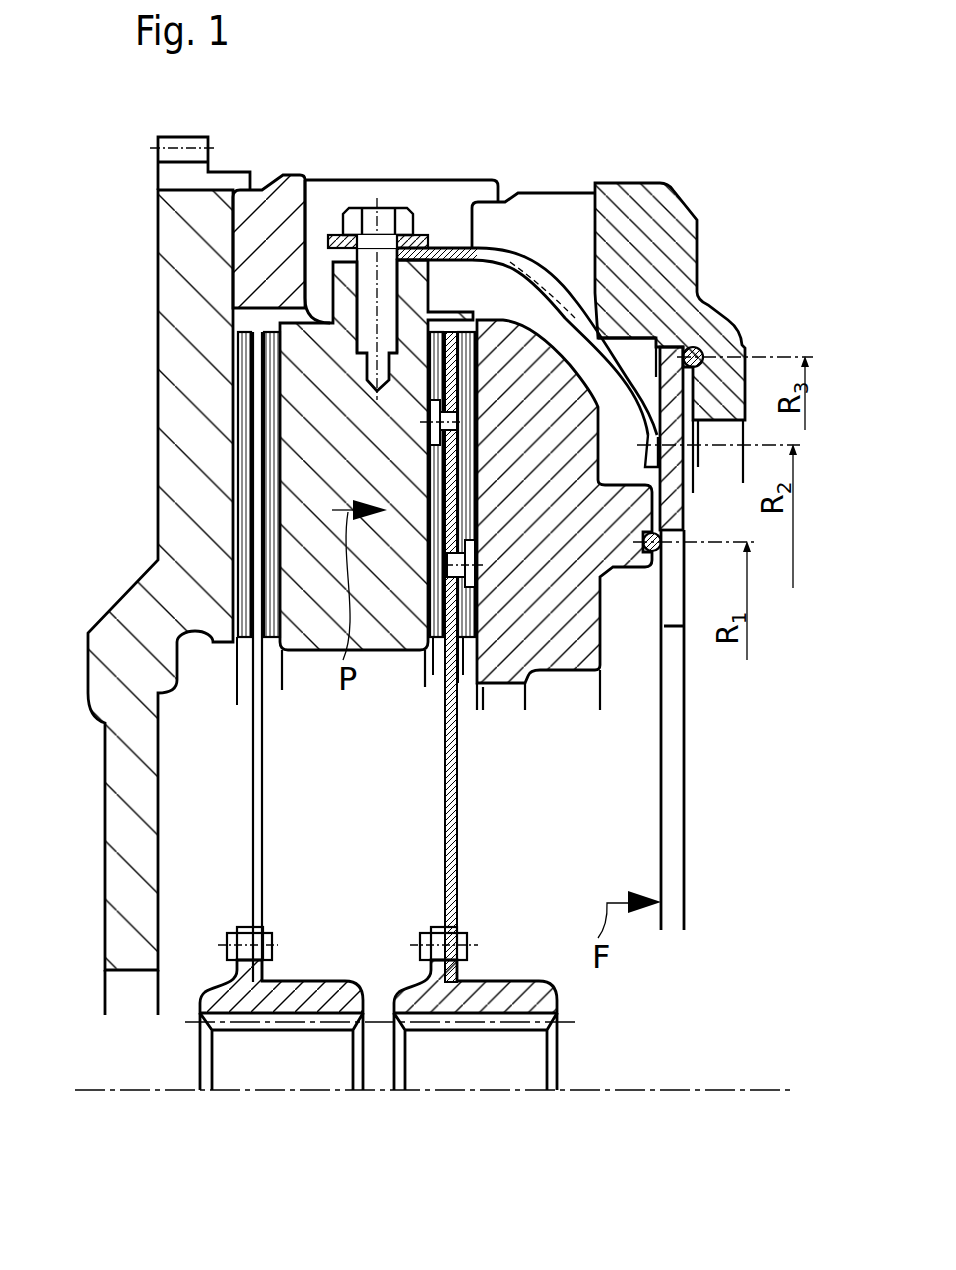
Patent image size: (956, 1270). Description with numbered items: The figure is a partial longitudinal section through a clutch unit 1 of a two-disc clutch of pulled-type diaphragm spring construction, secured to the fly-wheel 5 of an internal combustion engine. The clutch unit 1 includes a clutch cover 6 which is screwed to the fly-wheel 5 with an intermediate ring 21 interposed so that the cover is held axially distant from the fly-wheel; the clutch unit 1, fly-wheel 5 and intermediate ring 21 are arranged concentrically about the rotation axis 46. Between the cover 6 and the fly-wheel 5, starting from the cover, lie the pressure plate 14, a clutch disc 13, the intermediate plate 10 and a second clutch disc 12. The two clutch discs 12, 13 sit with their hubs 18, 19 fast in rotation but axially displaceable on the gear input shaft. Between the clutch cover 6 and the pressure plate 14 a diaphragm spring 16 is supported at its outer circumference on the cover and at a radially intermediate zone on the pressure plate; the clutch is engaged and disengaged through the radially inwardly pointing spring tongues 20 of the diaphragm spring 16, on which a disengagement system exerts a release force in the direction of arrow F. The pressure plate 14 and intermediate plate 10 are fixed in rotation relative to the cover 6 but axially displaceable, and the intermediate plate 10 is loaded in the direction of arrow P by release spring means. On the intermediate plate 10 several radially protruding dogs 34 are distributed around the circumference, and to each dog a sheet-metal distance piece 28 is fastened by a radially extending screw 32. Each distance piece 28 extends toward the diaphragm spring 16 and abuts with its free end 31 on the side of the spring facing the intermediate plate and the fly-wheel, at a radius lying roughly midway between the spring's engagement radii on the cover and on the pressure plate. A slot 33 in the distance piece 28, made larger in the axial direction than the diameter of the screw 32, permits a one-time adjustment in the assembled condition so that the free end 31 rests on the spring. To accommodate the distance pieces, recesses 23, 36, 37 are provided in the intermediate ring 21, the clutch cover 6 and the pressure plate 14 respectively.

The clutch unit 1 is at (656, 120).
The fly-wheel 5 is at (188, 223).
The clutch cover 6 is at (655, 238).
The intermediate plate 10 is at (305, 482).
The clutch disc 12 is at (260, 803).
The clutch disc 13 is at (453, 843).
The pressure plate 14 is at (537, 617).
The diaphragm spring 16 is at (673, 505).
The hub 18 is at (227, 1003).
The hub 19 is at (543, 998).
The spring tongues 20 is at (685, 812).
The intermediate ring 21 is at (283, 194).
The recess 23 is at (392, 194).
The distance piece 28 is at (520, 248).
The free end 31 is at (702, 356).
The screw 32 is at (373, 220).
The slot 33 is at (427, 248).
The dog 34 is at (345, 285).
The recess 36 is at (574, 370).
The recess 37 is at (563, 224).
The rotation axis 46 is at (680, 1092).